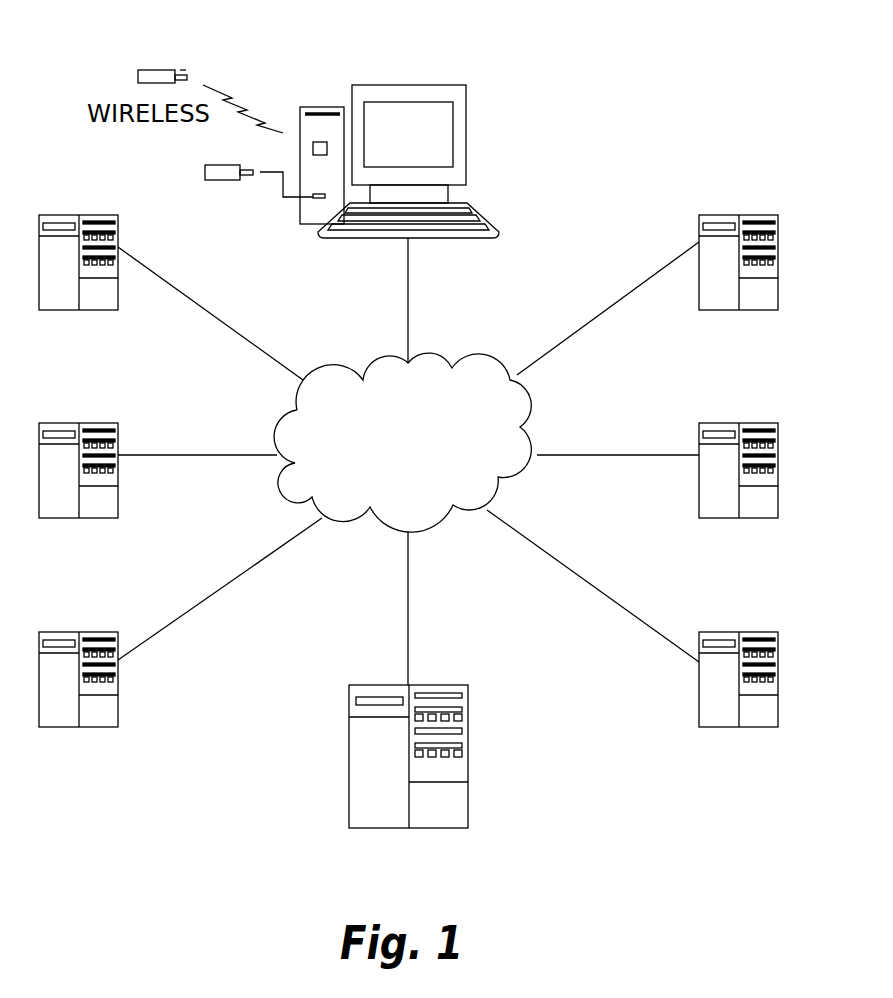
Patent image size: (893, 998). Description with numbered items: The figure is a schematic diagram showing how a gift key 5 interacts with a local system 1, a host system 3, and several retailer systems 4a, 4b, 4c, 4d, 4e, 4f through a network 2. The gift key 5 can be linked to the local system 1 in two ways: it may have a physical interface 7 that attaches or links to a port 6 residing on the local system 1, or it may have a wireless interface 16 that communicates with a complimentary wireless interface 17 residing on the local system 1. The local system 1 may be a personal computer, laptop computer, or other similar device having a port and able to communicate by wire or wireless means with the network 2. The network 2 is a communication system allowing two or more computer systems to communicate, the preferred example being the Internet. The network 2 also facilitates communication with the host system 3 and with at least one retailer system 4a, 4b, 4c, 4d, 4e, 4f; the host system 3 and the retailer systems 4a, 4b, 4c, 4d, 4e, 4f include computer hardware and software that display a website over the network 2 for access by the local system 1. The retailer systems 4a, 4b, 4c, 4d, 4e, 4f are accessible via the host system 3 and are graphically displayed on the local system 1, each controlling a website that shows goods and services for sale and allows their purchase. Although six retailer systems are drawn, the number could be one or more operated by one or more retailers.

The local system 1 is at (408, 85).
The network 2 is at (462, 352).
The host system 3 is at (437, 685).
The retailer system 4a is at (81, 255).
The retailer system 4b is at (82, 463).
The retailer system 4c is at (81, 672).
The retailer system 4d is at (742, 255).
The retailer system 4e is at (741, 463).
The retailer system 4f is at (739, 672).
The gift key 5 is at (158, 70).
The port 6 is at (318, 198).
The physical interface 7 is at (243, 180).
The wireless interface 16 is at (185, 70).
The complimentary wireless interface 17 is at (318, 142).